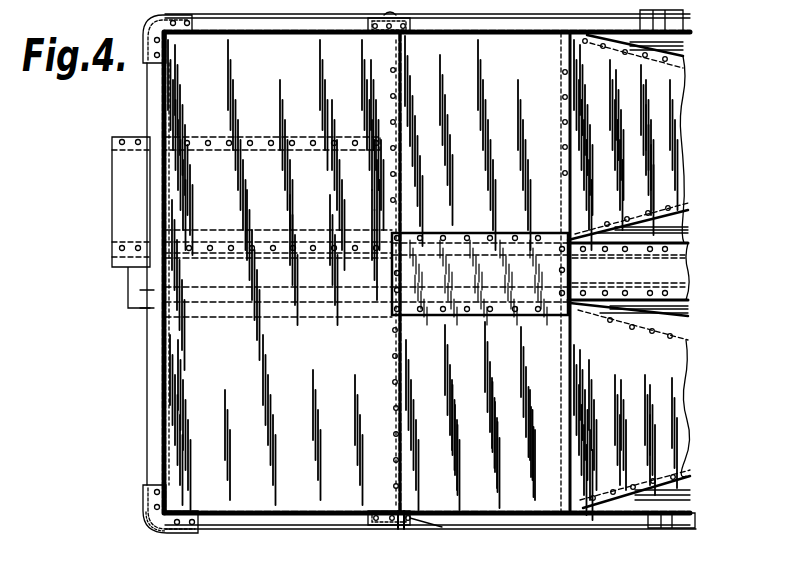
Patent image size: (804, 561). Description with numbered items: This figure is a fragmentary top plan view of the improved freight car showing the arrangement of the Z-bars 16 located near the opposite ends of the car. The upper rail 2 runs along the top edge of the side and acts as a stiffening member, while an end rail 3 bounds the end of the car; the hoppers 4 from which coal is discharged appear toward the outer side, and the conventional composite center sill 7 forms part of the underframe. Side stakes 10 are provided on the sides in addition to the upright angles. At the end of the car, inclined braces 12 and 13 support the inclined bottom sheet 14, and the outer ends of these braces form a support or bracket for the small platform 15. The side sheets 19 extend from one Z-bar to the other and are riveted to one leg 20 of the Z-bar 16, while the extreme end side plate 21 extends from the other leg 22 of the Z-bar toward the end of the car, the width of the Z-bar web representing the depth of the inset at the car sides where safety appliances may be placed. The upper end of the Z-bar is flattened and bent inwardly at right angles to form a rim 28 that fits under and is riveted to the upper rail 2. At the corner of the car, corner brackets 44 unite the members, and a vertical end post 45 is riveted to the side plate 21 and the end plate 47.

The upper rail 2 is at (338, 38).
The end rail 3 is at (157, 116).
The hopper 4 is at (658, 127).
The composite center sill 7 is at (285, 233).
The side stake 10 is at (660, 12).
The inclined brace 12 is at (323, 252).
The inclined brace 13 is at (302, 140).
The inclined bottom sheet 14 is at (230, 363).
The small platform 15 is at (125, 212).
The Z-bar 16 is at (383, 31).
The side sheet 19 is at (522, 16).
The leg of the Z-bar 20 is at (400, 527).
The extreme end side plate 21 is at (268, 30).
The leg of the Z-bar 22 is at (373, 522).
The rim 28 is at (437, 528).
The corner bracket 44 is at (177, 33).
The vertical end post 45 is at (158, 535).
The end plate 47 is at (163, 433).